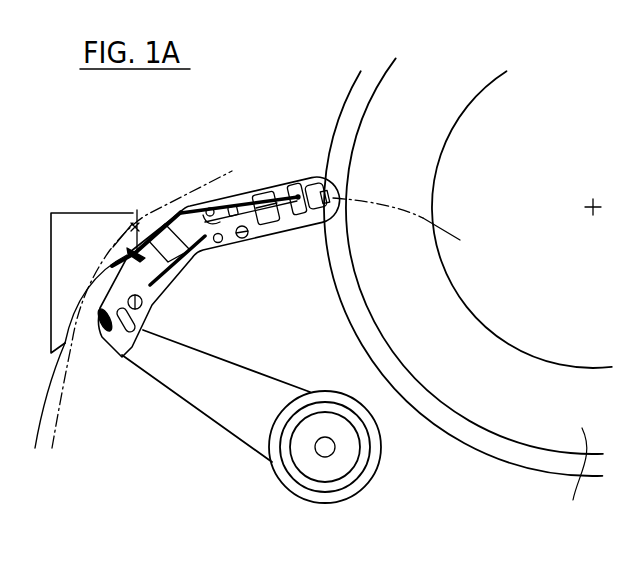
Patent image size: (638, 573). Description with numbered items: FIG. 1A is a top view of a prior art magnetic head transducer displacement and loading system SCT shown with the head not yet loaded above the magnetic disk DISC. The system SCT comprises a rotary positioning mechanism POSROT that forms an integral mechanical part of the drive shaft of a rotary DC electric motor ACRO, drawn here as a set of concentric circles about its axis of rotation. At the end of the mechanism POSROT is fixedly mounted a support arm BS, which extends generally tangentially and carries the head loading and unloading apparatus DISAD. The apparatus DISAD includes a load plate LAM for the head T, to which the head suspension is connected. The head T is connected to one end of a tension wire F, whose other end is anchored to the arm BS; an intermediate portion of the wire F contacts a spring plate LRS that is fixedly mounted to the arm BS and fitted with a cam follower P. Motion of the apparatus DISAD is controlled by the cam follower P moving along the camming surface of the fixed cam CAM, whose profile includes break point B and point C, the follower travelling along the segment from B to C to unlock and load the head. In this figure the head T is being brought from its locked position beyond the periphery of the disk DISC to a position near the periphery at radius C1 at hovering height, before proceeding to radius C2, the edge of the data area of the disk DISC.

The magnetic disk DISC is at (522, 301).
The radius C1 is at (352, 90).
The radius C2 is at (383, 82).
The annular zone ZA is at (372, 77).
The fixed cam CAM is at (63, 212).
The break point B is at (142, 309).
The tape position B' is at (112, 232).
The point C is at (137, 222).
The head loading and unloading apparatus DISAD is at (303, 130).
The spring plate LRS is at (170, 225).
The cam follower P is at (150, 225).
The load plate LAM is at (262, 192).
The head T is at (336, 178).
The tension wire F is at (208, 248).
The support arm BS is at (173, 282).
The rotary positioning mechanism POSROT is at (197, 400).
The rotary DC electric motor ACRO is at (293, 497).
The head transducer displacement and loading system SCT is at (104, 470).